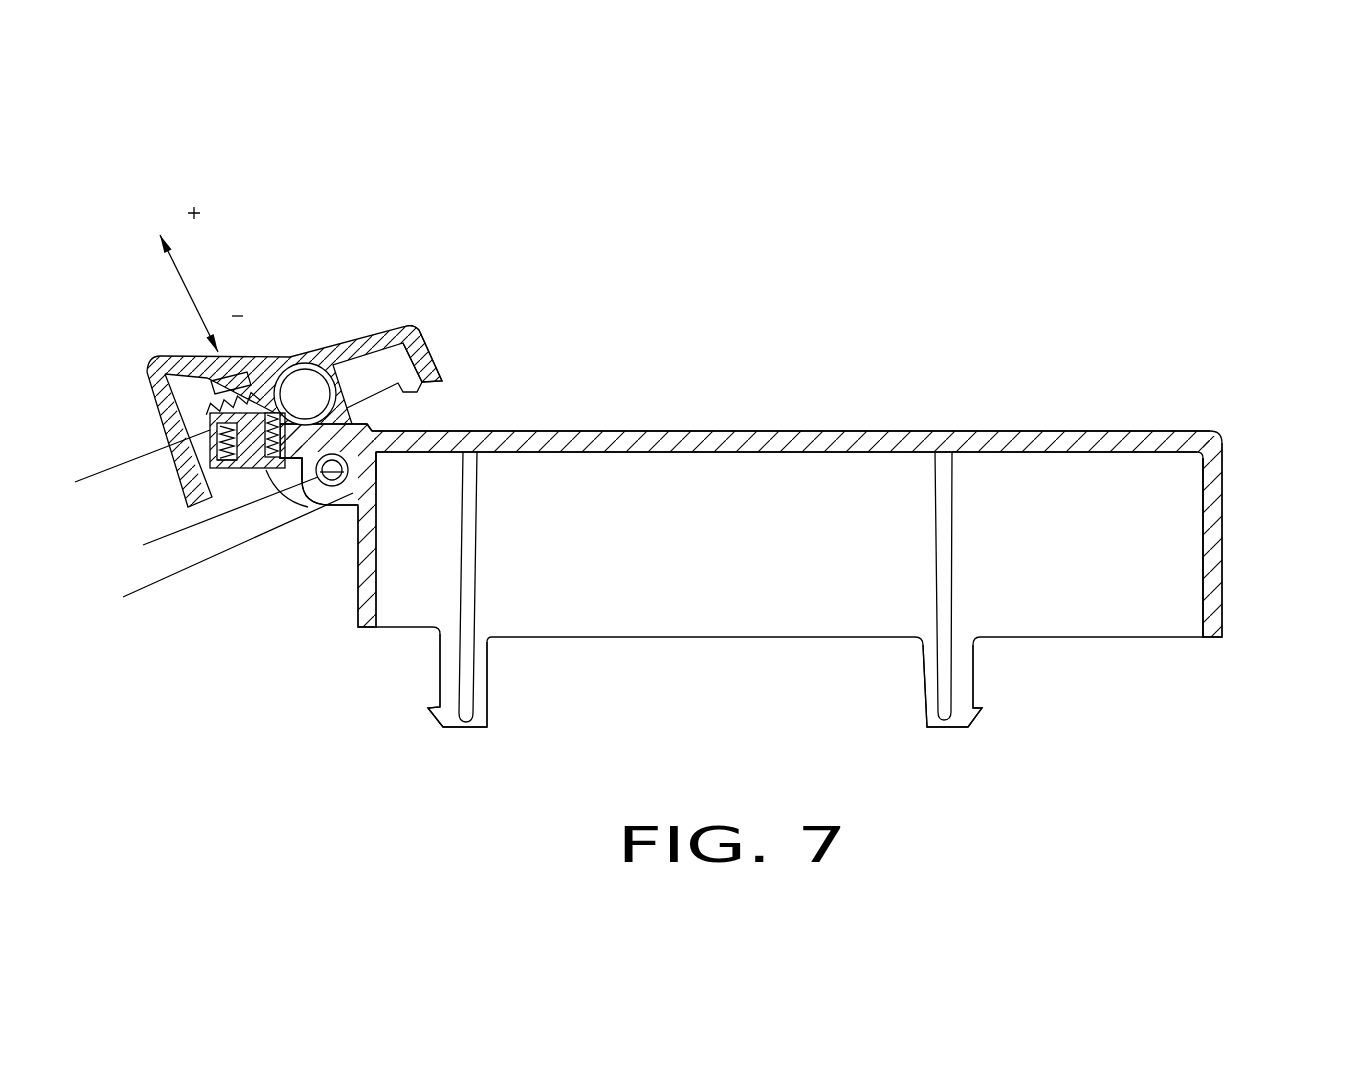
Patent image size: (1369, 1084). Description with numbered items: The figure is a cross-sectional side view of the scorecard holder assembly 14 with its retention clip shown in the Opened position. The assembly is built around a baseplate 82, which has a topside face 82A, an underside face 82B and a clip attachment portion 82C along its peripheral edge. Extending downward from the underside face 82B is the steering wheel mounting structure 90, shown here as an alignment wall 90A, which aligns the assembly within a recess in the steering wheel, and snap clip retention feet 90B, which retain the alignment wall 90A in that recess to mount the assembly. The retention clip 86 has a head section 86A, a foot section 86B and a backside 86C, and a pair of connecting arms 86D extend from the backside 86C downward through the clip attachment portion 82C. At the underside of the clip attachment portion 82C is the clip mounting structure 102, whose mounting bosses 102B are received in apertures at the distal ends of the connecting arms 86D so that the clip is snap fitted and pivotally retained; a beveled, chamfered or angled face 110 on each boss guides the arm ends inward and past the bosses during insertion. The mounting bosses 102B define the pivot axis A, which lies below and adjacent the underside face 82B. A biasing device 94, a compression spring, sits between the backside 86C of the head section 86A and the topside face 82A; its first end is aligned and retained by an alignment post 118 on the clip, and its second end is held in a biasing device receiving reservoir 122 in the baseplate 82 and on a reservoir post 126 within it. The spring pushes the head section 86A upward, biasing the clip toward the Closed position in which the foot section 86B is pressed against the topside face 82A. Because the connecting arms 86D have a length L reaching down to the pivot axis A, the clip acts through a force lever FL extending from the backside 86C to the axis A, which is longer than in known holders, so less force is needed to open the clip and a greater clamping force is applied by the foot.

The scorecard holder assembly 14 is at (1127, 208).
The baseplate 82 is at (1005, 430).
The topside face 82A is at (851, 430).
The underside face 82B is at (773, 448).
The clip attachment portion 82C is at (290, 478).
The retention clip 86 is at (301, 333).
The head section 86A is at (148, 370).
The foot section 86B is at (390, 328).
The backside 86C is at (366, 363).
The connecting arms 86D is at (293, 521).
The steering wheel mounting structure 90 is at (1227, 520).
The alignment wall 90A is at (1208, 557).
The snap clip retention feet 90B is at (483, 690).
The biasing device 94 is at (210, 413).
The clip mounting structure 102 is at (291, 468).
The mounting bosses 102B is at (377, 460).
The beveled, chamfered or angled face 110 is at (377, 462).
The biasing device alignment post 118 is at (247, 387).
The biasing device receiving reservoir 122 is at (277, 457).
The biasing device receiving reservoir post 126 is at (247, 457).
The pivot axis A is at (337, 488).
The force lever FL is at (132, 462).
The length L is at (93, 482).